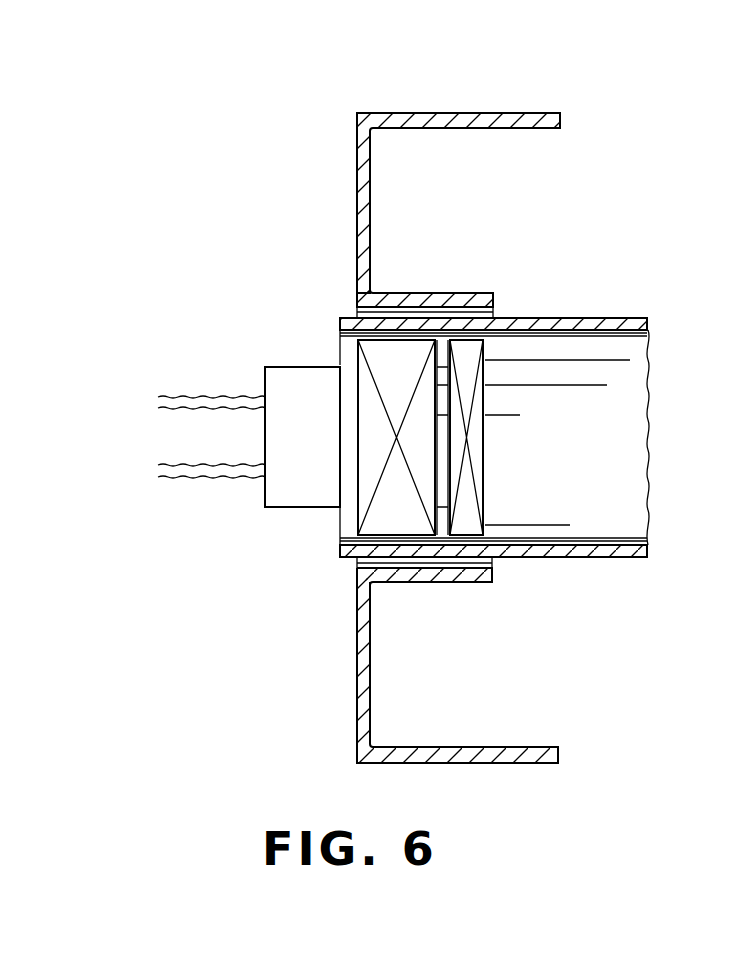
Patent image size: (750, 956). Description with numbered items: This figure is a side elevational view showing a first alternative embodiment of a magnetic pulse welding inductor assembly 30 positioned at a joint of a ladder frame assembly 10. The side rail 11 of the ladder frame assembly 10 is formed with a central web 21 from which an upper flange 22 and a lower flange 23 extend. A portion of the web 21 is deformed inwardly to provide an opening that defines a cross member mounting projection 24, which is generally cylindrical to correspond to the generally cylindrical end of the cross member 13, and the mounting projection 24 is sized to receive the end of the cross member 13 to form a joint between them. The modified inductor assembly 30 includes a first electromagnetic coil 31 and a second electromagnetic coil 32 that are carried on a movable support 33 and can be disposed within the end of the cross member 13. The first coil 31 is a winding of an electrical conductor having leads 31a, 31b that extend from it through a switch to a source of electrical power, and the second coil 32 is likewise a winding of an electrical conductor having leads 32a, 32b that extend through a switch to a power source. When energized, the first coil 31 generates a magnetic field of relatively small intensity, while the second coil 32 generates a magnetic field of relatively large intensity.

The ladder frame assembly 10 is at (645, 118).
The side rail 11 is at (348, 88).
The cross member 13 is at (578, 550).
The central web 21 is at (357, 203).
The upper flange 22 is at (465, 113).
The lower flange 23 is at (482, 760).
The cross member mounting projection 24 is at (450, 293).
The magnetic pulse welding inductor assembly 30 is at (266, 542).
The first electromagnetic coil 31 is at (483, 395).
The lead 31a is at (175, 406).
The lead 31b is at (187, 397).
The second electromagnetic coil 32 is at (418, 445).
The lead 32a is at (190, 478).
The lead 32b is at (183, 465).
The movable support 33 is at (315, 368).